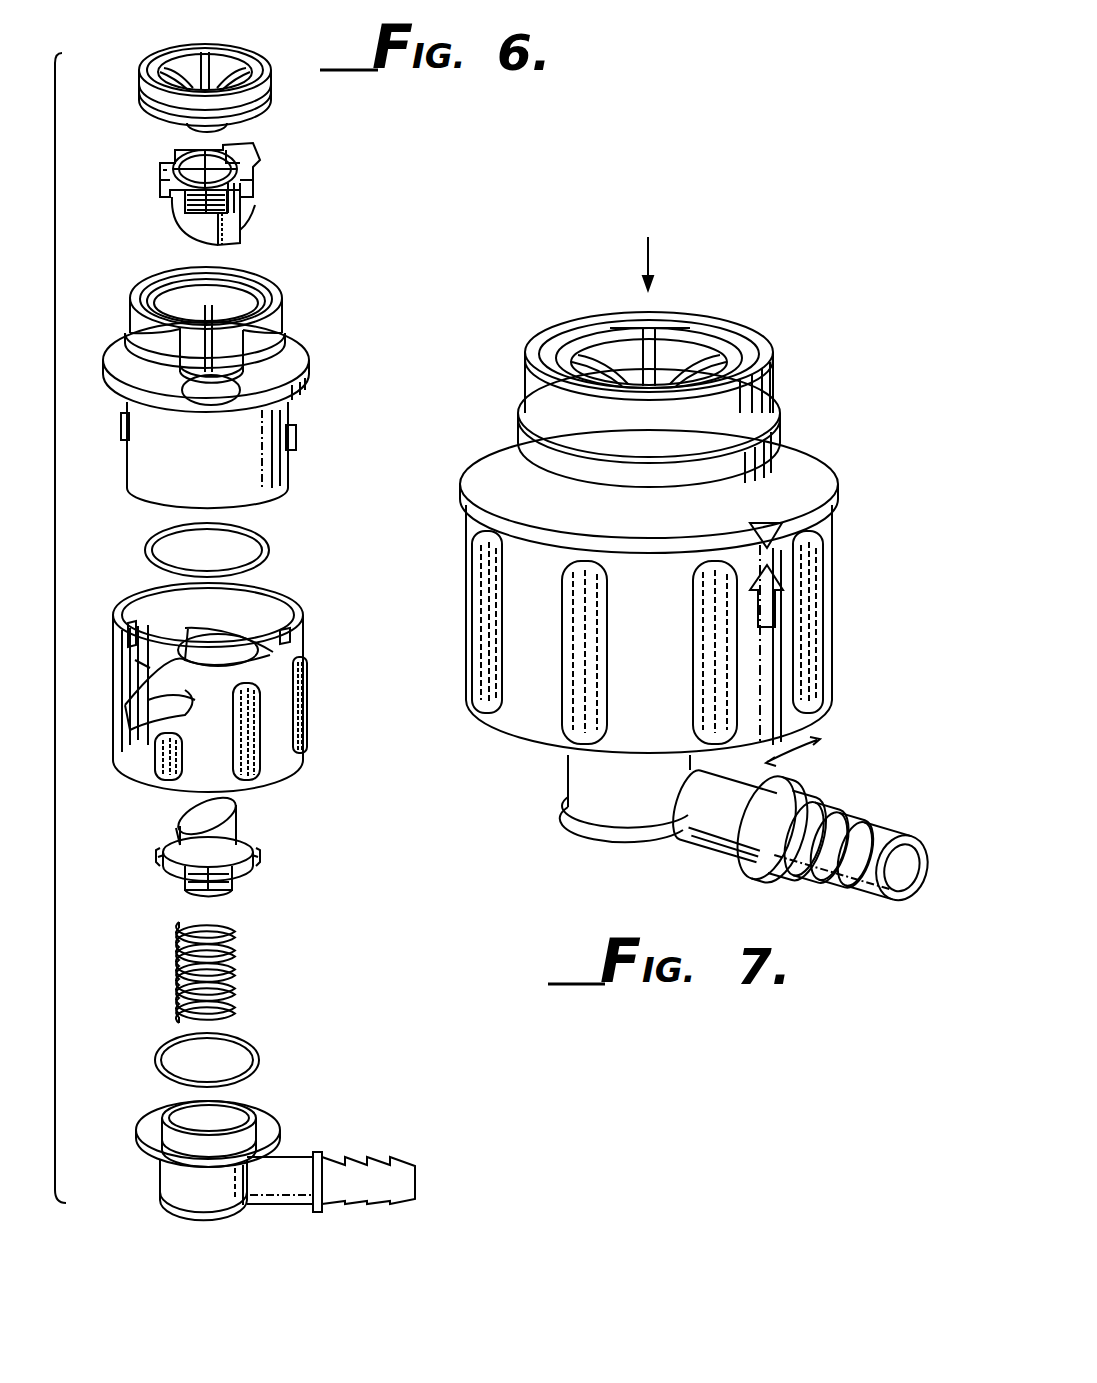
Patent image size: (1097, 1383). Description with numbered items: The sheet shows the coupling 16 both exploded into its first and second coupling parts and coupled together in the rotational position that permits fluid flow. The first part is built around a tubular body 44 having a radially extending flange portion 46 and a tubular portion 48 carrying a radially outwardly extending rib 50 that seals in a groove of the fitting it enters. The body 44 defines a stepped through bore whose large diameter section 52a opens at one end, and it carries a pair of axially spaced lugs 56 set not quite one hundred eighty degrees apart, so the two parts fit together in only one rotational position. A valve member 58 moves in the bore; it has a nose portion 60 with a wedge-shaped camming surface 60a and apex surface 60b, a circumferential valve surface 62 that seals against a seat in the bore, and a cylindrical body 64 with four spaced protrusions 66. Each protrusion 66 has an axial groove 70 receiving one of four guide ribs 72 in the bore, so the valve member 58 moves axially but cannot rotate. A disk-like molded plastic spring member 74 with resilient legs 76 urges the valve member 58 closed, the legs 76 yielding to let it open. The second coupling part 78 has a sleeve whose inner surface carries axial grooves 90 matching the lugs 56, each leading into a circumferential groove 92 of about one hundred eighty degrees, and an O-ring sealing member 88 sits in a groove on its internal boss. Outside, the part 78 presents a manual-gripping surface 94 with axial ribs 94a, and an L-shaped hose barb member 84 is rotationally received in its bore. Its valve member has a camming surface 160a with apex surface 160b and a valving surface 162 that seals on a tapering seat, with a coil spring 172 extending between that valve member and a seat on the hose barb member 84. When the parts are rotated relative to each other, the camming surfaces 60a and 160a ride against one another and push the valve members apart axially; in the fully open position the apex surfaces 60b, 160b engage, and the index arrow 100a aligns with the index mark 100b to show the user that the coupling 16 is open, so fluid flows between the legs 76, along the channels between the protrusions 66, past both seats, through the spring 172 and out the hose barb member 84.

In FIG. 6, the coupling 16 is at (55, 618).
In FIG. 7, the coupling 16 is at (648, 252).
In FIG. 6, the tubular body 44 is at (120, 335).
In FIG. 6, the radially extending flange portion 46 is at (300, 386).
In FIG. 6, the tubular portion 48 is at (284, 306).
In FIG. 7, the tubular portion 48 is at (771, 393).
In FIG. 6, the radially outwardly extending rib 50 is at (285, 353).
In FIG. 7, the radially outwardly extending rib 50 is at (781, 440).
In FIG. 7, the large diameter section 52a is at (742, 356).
In FIG. 6, the lugs 56 is at (299, 441).
In FIG. 6, the valve member 58 is at (242, 229).
In FIG. 6, the nose portion 60 is at (242, 240).
In FIG. 6, the camming surface 60a is at (176, 240).
In FIG. 6, the apex surface 60b is at (242, 246).
In FIG. 6, the valve surface 62 is at (166, 235).
In FIG. 6, the cylindrical body 64 is at (176, 198).
In FIG. 6, the protrusions 66 is at (240, 148).
In FIG. 6, the axially-extending groove 70 is at (236, 216).
In FIG. 7, the guide ribs 72 is at (627, 335).
In FIG. 6, the spring member 74 is at (251, 46).
In FIG. 7, the spring member 74 is at (722, 345).
In FIG. 6, the resilient plastic legs 76 is at (184, 48).
In FIG. 7, the second coupling part 78 is at (850, 692).
In FIG. 6, the L-shaped hose barb member 84 is at (280, 1206).
In FIG. 7, the L-shaped hose barb member 84 is at (716, 845).
In FIG. 6, the O-ring sealing member 88 is at (266, 542).
In FIG. 6, the grooves 90 is at (141, 625).
In FIG. 6, the circumferentially-extending grooves 92 is at (140, 668).
In FIG. 6, the manual-gripping surface 94 is at (285, 700).
In FIG. 7, the manual-gripping surface 94 is at (533, 727).
In FIG. 6, the axially extending ribs 94a is at (258, 760).
In FIG. 7, the axially extending ribs 94a is at (695, 668).
In FIG. 7, the index arrow 100a is at (772, 607).
In FIG. 7, the index mark 100b is at (770, 528).
In FIG. 6, the camming surface 160a is at (214, 818).
In FIG. 6, the apex surface 160b is at (180, 806).
In FIG. 6, the valving surface 162 is at (252, 850).
In FIG. 6, the spring 172 is at (240, 967).